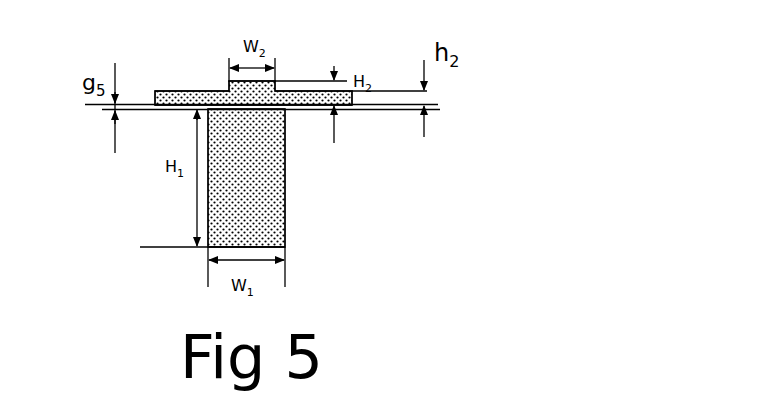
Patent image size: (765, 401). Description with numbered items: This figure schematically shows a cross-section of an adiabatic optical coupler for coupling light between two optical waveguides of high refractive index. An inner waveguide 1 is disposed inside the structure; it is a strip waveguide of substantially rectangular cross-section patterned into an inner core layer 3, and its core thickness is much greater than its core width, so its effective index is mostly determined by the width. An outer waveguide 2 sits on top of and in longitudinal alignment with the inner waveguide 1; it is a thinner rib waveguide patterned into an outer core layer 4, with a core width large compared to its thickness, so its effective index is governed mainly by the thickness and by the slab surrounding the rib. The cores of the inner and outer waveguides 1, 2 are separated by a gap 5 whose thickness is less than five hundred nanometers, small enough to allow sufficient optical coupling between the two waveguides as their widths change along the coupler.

The inner waveguide 1 is at (263, 195).
The outer waveguide 2 is at (245, 92).
The inner core layer 3 is at (431, 192).
The outer core layer 4 is at (468, 73).
The gap 5 is at (289, 110).